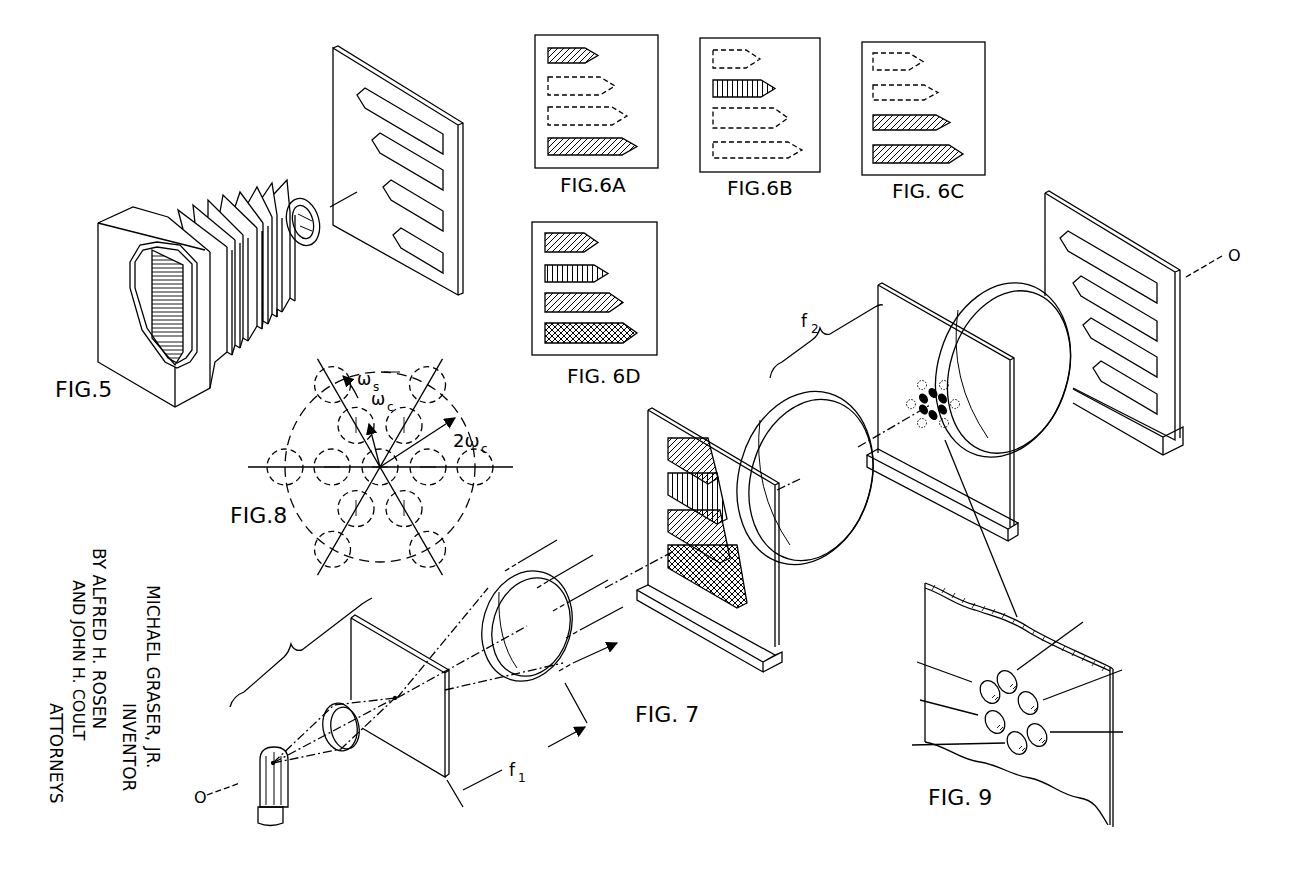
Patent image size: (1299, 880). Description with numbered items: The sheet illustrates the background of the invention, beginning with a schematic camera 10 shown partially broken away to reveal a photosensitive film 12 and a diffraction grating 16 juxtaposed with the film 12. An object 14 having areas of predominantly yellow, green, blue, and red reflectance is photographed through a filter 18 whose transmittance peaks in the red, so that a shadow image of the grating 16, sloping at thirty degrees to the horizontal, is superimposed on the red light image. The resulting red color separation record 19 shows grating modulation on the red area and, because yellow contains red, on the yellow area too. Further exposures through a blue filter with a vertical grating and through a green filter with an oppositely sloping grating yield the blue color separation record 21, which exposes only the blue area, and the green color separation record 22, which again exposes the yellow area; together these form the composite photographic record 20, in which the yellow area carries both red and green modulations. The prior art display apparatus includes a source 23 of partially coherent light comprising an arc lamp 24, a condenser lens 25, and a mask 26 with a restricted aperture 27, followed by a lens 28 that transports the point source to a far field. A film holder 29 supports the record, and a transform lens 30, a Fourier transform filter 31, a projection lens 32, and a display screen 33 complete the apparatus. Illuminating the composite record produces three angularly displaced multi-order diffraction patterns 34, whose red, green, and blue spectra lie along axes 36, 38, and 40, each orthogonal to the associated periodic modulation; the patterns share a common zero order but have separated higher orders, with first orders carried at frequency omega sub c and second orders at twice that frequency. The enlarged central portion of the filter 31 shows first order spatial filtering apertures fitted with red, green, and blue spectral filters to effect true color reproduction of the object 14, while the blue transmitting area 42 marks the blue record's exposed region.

In FIG. 5, the photographic camera 10 is at (246, 330).
In FIG. 5, the photosensitive film 12 is at (148, 333).
In FIG. 5, the object 14 is at (333, 105).
In FIG. 5, the diffraction grating 16 is at (162, 352).
In FIG. 5, the filter 18 is at (321, 240).
In FIG. 6A, the red color separation record 19 is at (630, 44).
In FIG. 6D, the composite photographic record 20 is at (627, 231).
In FIG. 7, the composite photographic record 20 is at (777, 623).
In FIG. 6B, the blue color separation record 21 is at (797, 44).
In FIG. 6C, the green color separation record 22 is at (960, 50).
In FIG. 7, the source of at least partially coherent light 23 is at (301, 652).
In FIG. 7, the arc lamp 24 is at (289, 781).
In FIG. 7, the condenser lens 25 is at (357, 752).
In FIG. 7, the mask 26 is at (447, 752).
In FIG. 7, the aperture 27 is at (398, 700).
In FIG. 7, the lens 28 is at (568, 673).
In FIG. 7, the film holder 29 is at (777, 660).
In FIG. 7, the transform lens 30 is at (852, 552).
In FIG. 7, the Fourier transform filter 31 is at (1005, 493).
In FIG. 9, the Fourier transform filter 31 is at (1108, 798).
In FIG. 7, the projection lens 32 is at (1065, 437).
In FIG. 7, the display screen 33 is at (1178, 393).
In FIG. 8, the multi-order diffraction patterns 34 is at (478, 418).
In FIG. 7, the multi-order diffraction patterns 34 is at (965, 414).
In FIG. 8, the red diffraction pattern axis 36 is at (317, 356).
In FIG. 8, the green diffraction pattern axis 38 is at (258, 459).
In FIG. 8, the blue diffraction pattern axis 40 is at (452, 362).
In FIG. 6B, the blue transmitting area 42 is at (785, 88).